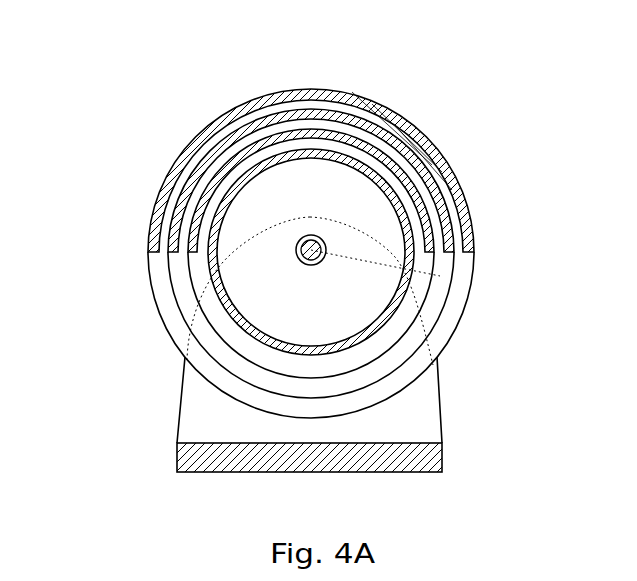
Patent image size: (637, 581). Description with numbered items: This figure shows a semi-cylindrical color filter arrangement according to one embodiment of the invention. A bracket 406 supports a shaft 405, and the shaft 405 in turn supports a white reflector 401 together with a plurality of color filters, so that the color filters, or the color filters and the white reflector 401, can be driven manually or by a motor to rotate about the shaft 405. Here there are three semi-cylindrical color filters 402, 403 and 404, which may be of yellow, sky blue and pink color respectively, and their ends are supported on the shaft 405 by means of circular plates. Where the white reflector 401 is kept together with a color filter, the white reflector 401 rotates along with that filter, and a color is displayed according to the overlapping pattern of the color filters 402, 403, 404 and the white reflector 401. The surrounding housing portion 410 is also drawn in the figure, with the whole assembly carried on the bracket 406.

The white reflector 401 is at (182, 147).
The semi-cylindrical color filter 402 is at (247, 140).
The semi-cylindrical color filter 403 is at (350, 91).
The semi-cylindrical color filter 404 is at (454, 160).
The shaft 405 is at (440, 276).
The bracket 406 is at (427, 431).
The housing body 410 is at (147, 279).